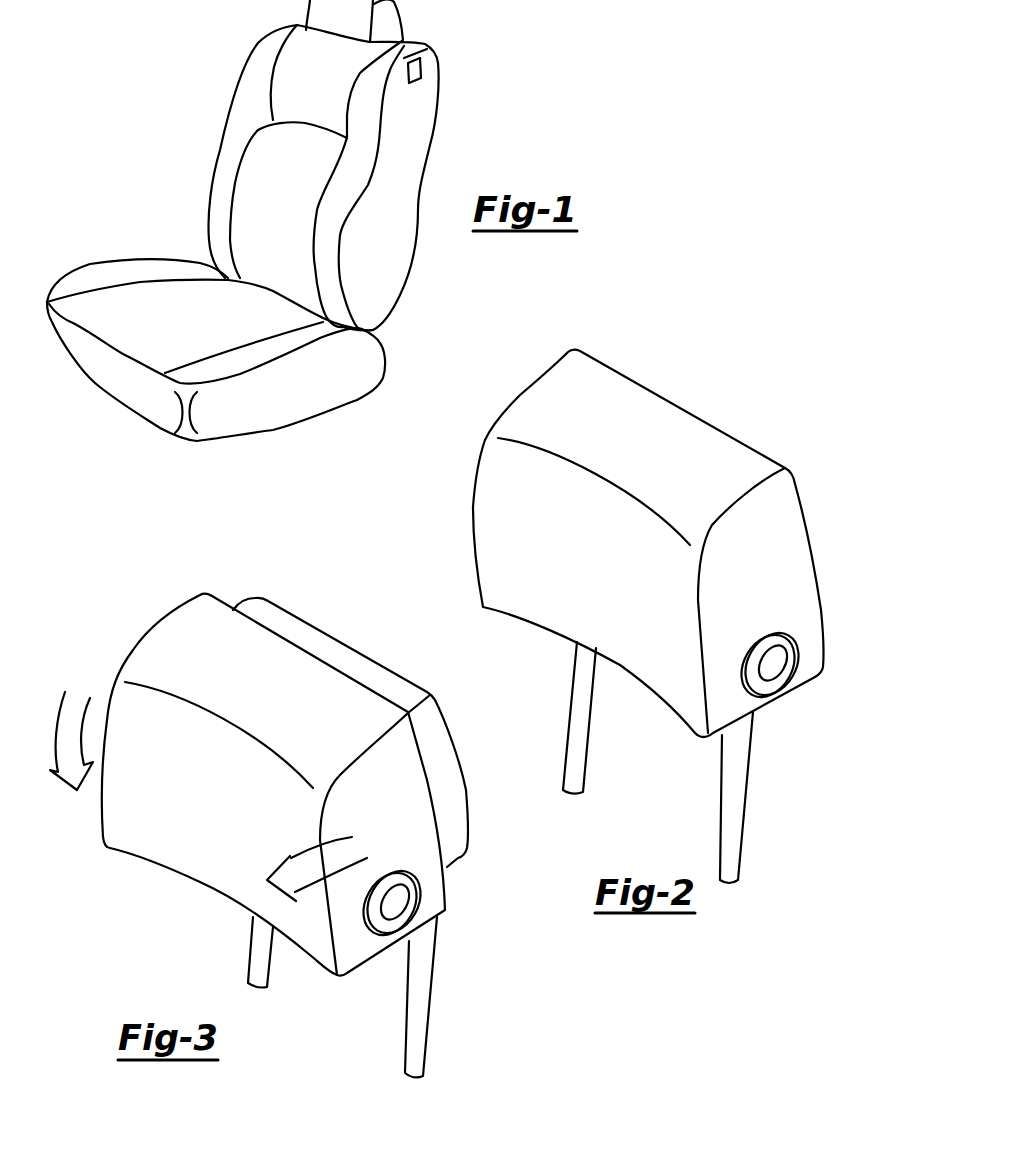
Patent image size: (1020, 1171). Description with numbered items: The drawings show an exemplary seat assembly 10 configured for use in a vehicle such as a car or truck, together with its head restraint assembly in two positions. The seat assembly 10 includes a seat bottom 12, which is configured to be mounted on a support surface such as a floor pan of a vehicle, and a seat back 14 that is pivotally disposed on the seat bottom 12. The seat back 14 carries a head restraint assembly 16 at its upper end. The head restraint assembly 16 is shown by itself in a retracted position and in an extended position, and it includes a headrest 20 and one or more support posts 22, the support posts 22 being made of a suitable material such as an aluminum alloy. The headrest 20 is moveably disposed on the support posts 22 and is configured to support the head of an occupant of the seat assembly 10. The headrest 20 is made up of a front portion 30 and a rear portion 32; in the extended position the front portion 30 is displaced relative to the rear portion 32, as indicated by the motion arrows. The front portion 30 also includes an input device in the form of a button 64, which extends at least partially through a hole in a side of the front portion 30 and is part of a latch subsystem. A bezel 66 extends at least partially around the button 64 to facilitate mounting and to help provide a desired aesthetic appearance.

In FIG. 1, the seat assembly 10 is at (252, 33).
In FIG. 1, the seat bottom 12 is at (157, 260).
In FIG. 1, the seat back 14 is at (250, 78).
In FIG. 1, the head restraint assembly 16 is at (410, 17).
In FIG. 2, the head restraint assembly 16 is at (743, 396).
In FIG. 2, the headrest 20 is at (612, 362).
In FIG. 2, the support post 22 is at (726, 826).
In FIG. 3, the support post 22 is at (400, 1067).
In FIG. 3, the front portion 30 is at (105, 823).
In FIG. 3, the rear portion 32 is at (324, 625).
In FIG. 2, the button 64 is at (772, 663).
In FIG. 2, the bezel 66 is at (793, 643).